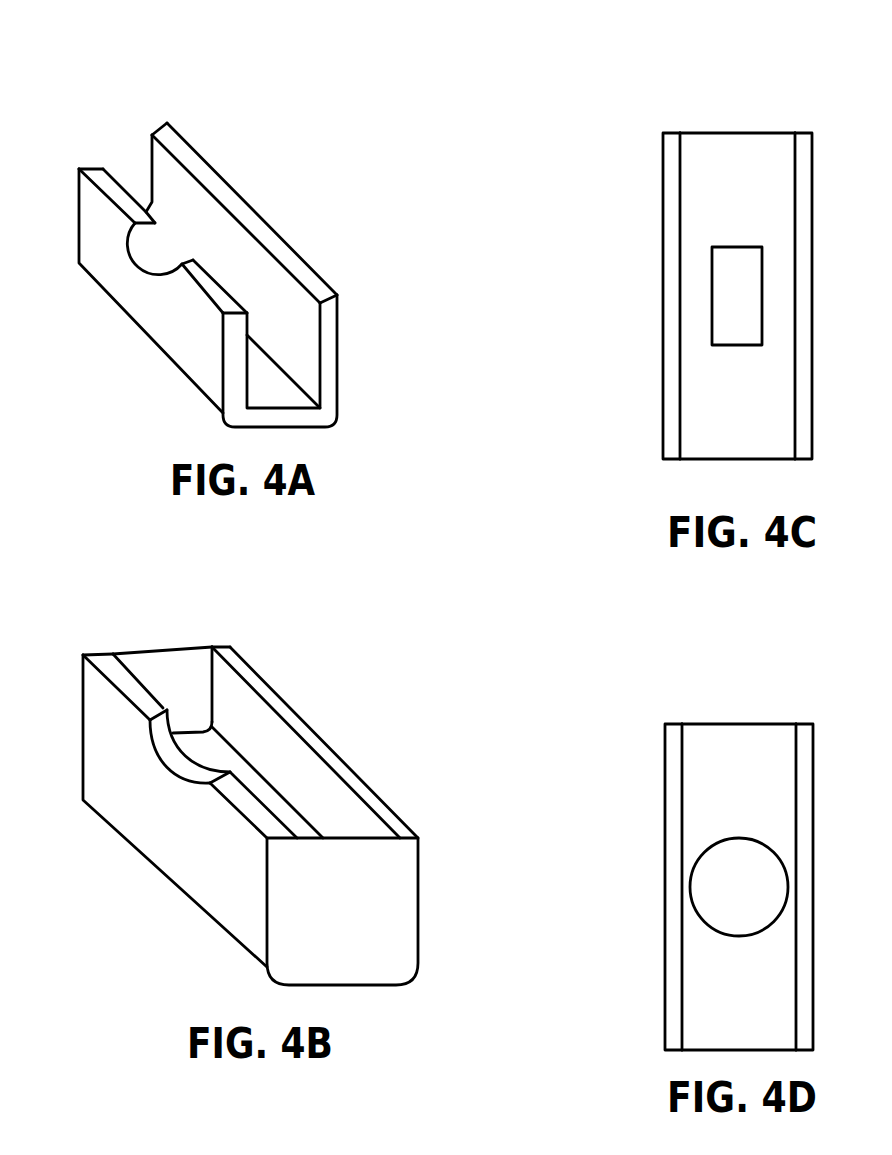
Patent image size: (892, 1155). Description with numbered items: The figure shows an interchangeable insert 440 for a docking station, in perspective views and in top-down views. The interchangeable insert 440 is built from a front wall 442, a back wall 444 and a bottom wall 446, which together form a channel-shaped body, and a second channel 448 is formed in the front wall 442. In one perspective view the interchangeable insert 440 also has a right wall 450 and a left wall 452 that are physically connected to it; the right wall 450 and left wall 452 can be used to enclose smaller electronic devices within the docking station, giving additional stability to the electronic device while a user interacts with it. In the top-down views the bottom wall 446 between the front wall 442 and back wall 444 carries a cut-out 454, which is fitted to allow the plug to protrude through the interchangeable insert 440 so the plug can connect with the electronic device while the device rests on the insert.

In FIG. 4A, the interchangeable insert 440 is at (167, 115).
In FIG. 4B, the interchangeable insert 440 is at (217, 625).
In FIG. 4C, the interchangeable insert 440 is at (754, 123).
In FIG. 4D, the interchangeable insert 440 is at (756, 722).
In FIG. 4A, the front wall 442 is at (92, 168).
In FIG. 4B, the front wall 442 is at (108, 668).
In FIG. 4C, the front wall 442 is at (673, 174).
In FIG. 4D, the front wall 442 is at (675, 772).
In FIG. 4A, the back wall 444 is at (178, 157).
In FIG. 4B, the back wall 444 is at (247, 680).
In FIG. 4C, the back wall 444 is at (802, 158).
In FIG. 4D, the back wall 444 is at (803, 755).
In FIG. 4A, the bottom wall 446 is at (275, 402).
In FIG. 4B, the bottom wall 446 is at (210, 742).
In FIG. 4C, the bottom wall 446 is at (770, 397).
In FIG. 4D, the bottom wall 446 is at (773, 993).
In FIG. 4A, the second channel 448 is at (150, 245).
In FIG. 4B, the second channel 448 is at (182, 763).
In FIG. 4B, the right wall 450 is at (157, 680).
In FIG. 4B, the left wall 452 is at (362, 892).
In FIG. 4C, the cut-out 454 is at (728, 322).
In FIG. 4D, the cut-out 454 is at (730, 918).